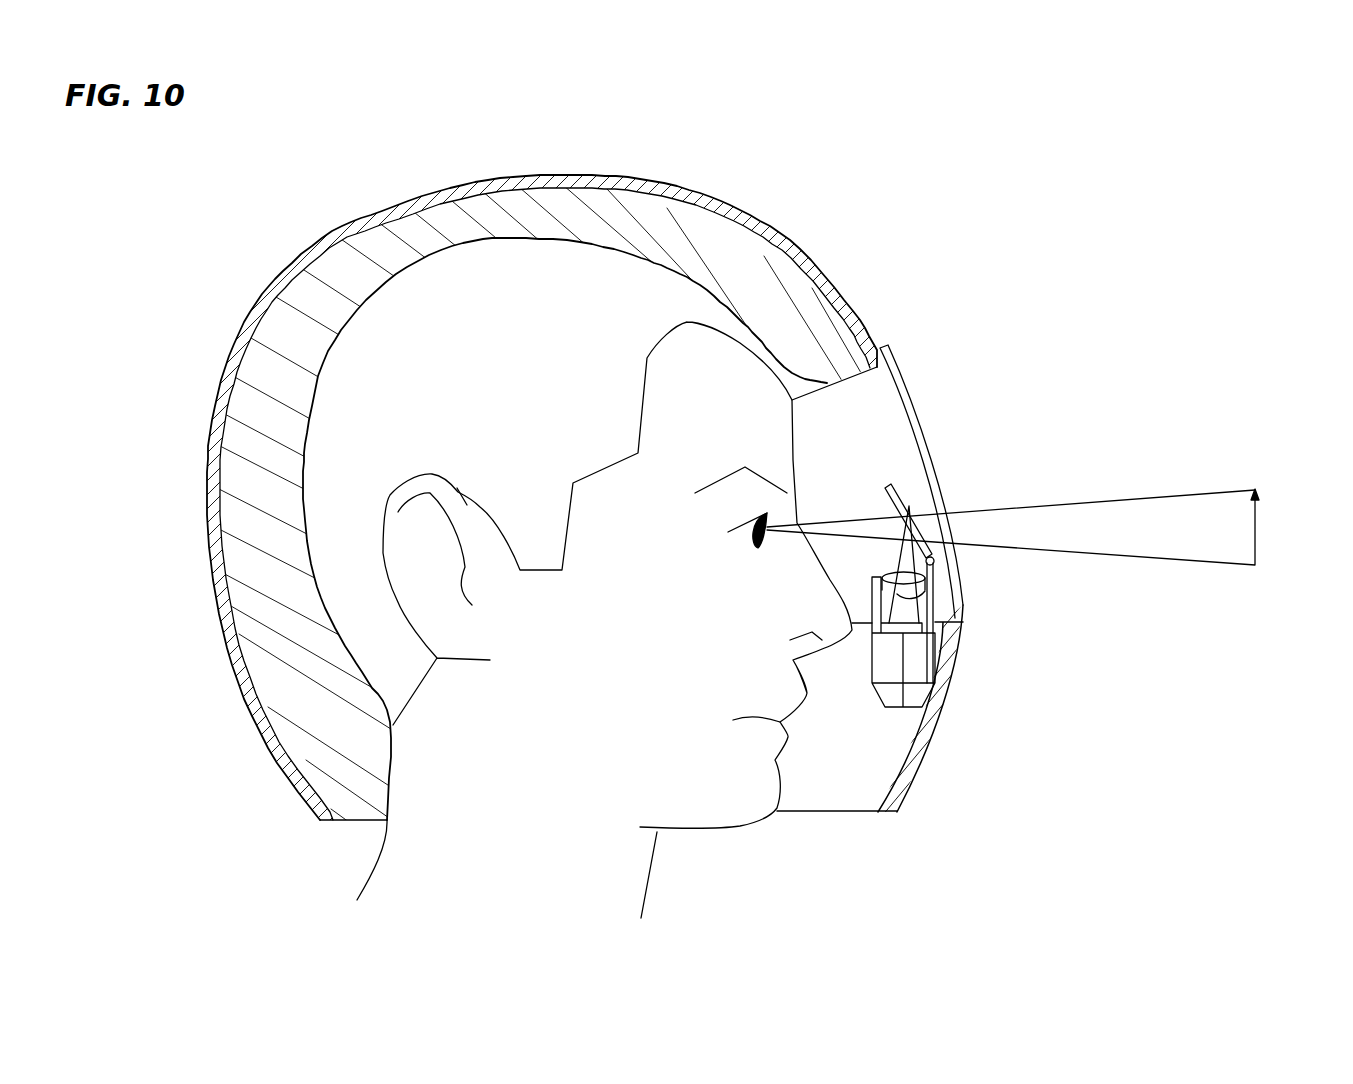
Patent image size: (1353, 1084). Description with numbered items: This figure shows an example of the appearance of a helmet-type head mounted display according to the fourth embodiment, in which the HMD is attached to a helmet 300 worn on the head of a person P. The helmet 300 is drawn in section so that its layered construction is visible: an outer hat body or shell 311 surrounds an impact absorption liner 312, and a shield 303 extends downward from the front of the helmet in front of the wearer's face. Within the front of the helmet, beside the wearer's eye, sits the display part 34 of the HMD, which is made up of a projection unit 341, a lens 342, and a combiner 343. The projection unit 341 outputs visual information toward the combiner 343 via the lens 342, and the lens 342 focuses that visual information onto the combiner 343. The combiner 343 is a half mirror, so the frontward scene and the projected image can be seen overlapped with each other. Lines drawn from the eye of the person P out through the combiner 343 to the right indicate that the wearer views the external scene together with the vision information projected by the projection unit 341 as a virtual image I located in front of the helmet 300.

The helmet 300 is at (604, 565).
The impact absorption liner 312 is at (315, 282).
The hat body (shell) 311 is at (757, 222).
The visor 303 is at (900, 382).
The display part 34 is at (978, 630).
The projection unit 341 is at (917, 662).
The lens 342 is at (938, 603).
The combiner 343 is at (898, 490).
The user P is at (738, 832).
The virtual image I is at (1052, 501).